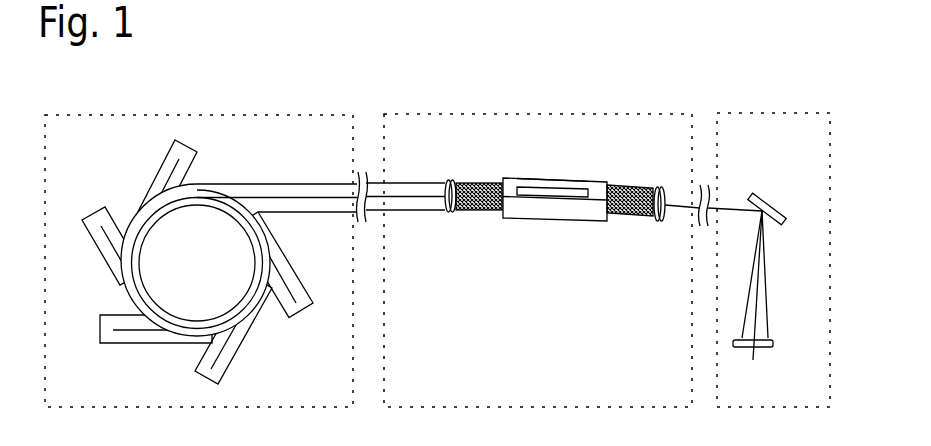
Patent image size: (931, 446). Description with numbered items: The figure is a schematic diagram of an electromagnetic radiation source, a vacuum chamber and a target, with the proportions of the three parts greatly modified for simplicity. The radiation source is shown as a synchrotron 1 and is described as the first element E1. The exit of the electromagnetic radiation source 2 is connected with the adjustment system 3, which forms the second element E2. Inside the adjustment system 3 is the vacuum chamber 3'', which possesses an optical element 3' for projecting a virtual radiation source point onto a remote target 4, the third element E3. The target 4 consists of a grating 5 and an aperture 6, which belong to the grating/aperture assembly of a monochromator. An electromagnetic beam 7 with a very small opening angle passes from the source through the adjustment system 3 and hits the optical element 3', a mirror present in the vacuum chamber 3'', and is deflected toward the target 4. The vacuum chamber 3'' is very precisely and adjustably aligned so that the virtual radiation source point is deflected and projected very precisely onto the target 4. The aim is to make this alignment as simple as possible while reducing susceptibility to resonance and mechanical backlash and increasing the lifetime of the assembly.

The synchrotron 1 is at (135, 230).
The exit of the electromagnetic radiation source 2 is at (167, 176).
The adjustment system 3 is at (555, 170).
The optical element 3' is at (552, 168).
The vacuum chamber 3'' is at (552, 152).
The target 4 is at (775, 180).
The grating 5 is at (779, 212).
The aperture 6 is at (773, 341).
The electromagnetic beam 7 is at (406, 196).
The first element E1 is at (90, 115).
The second element E2 is at (410, 114).
The third element E3 is at (730, 113).